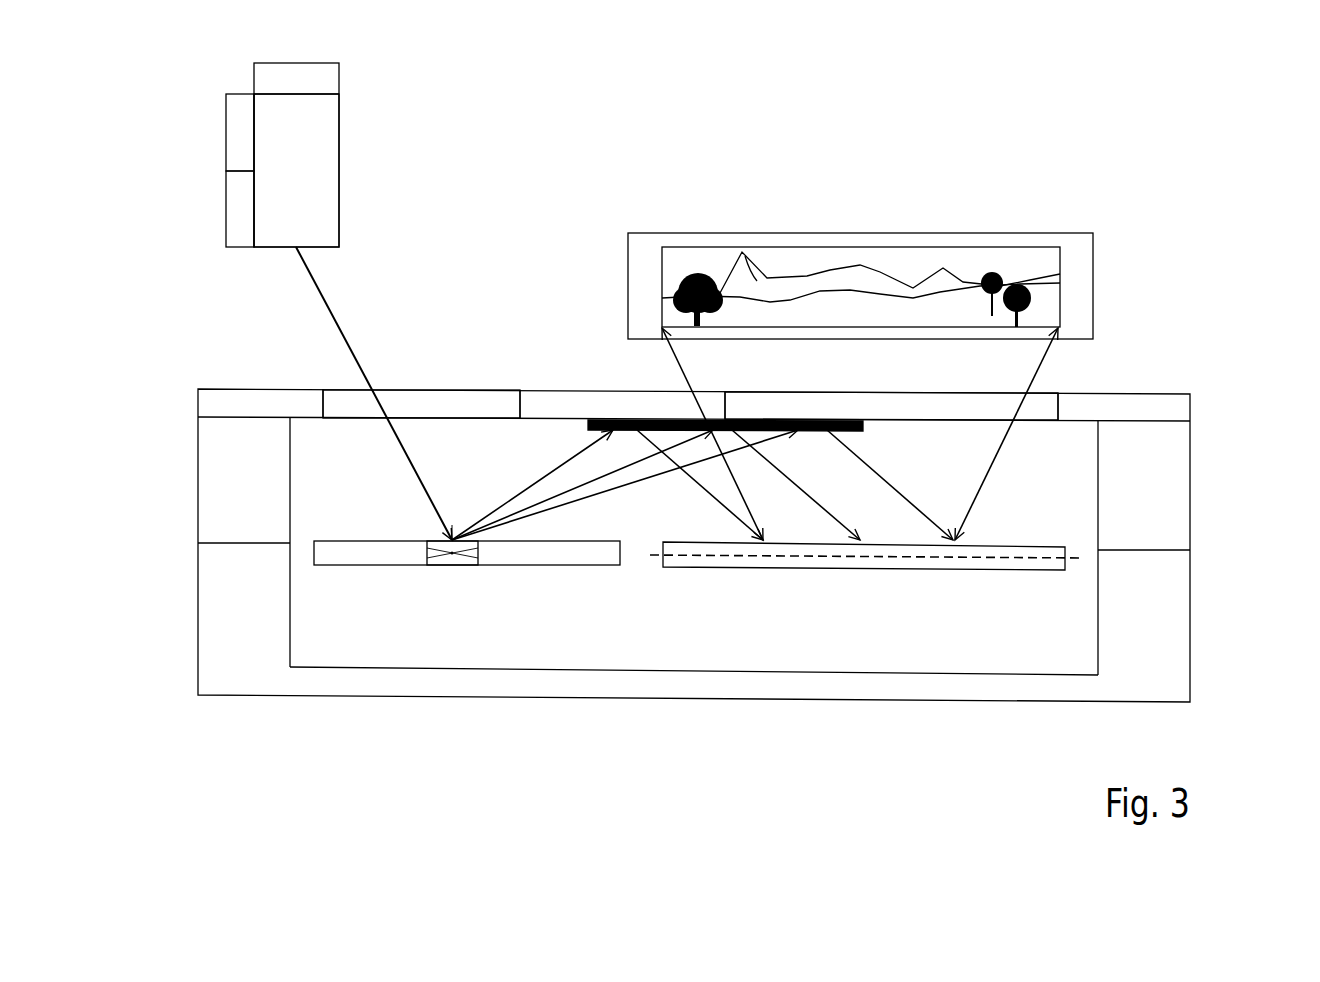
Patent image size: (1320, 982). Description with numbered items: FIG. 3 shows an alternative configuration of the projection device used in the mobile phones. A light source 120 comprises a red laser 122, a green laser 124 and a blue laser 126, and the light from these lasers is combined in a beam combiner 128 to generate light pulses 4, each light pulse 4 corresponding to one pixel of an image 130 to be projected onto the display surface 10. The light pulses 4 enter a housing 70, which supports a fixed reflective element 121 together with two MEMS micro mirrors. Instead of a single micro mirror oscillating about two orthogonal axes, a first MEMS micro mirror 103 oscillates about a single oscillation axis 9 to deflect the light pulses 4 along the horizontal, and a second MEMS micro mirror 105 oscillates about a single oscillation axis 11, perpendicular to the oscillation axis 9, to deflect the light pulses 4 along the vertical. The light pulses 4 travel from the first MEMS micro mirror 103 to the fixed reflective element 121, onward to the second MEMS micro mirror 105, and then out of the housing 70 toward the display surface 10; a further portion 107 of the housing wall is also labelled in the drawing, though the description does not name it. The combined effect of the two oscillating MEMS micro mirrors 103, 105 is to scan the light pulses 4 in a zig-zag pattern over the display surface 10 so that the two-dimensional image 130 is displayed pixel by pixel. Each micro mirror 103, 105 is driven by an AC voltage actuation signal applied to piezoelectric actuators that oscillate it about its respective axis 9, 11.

The light pulses 4 is at (340, 328).
The oscillation axis 9 is at (447, 565).
The display surface 10 is at (919, 284).
The oscillation axis 11 is at (1083, 562).
The housing 70 is at (1199, 617).
The first MEMS micro mirror 103 is at (464, 596).
The second MEMS micro mirror 105 is at (428, 390).
The window segment 107 is at (893, 400).
The light source 120 is at (287, 184).
The fixed reflective element 121 is at (820, 433).
The red laser 122 is at (233, 219).
The green laser 124 is at (233, 130).
The blue laser 126 is at (339, 82).
The beam combiner 128 is at (333, 218).
The image 130 is at (1060, 271).